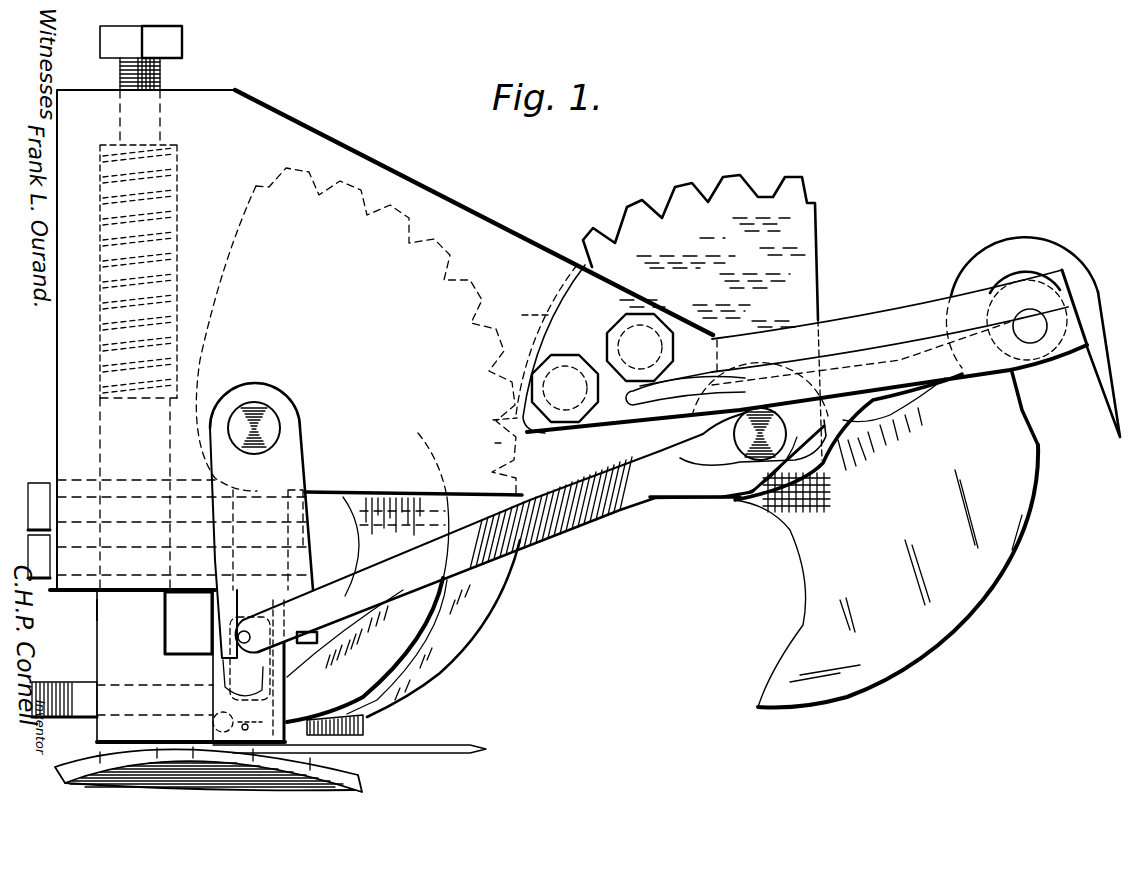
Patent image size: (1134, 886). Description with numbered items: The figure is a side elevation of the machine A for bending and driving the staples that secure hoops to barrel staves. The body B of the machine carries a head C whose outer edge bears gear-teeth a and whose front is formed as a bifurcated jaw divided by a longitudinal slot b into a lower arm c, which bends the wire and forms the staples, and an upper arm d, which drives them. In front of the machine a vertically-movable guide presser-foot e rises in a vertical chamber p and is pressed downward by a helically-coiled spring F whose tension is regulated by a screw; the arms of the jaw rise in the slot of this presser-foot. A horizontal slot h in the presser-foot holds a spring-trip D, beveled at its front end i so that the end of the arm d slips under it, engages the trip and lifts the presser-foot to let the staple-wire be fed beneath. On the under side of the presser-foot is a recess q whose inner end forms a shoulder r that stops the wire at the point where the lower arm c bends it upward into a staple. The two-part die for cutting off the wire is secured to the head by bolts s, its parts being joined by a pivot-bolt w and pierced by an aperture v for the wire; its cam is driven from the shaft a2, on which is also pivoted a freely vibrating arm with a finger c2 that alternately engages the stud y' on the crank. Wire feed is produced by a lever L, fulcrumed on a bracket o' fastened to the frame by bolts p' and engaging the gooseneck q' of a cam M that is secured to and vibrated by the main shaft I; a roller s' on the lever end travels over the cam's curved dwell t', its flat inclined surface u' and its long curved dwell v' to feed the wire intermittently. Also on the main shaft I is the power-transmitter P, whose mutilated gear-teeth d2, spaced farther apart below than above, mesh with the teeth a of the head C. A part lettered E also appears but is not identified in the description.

The staple bending and driving machine A is at (474, 212).
The body B is at (180, 340).
The head C is at (386, 332).
The helically-coiled spring F is at (100, 246).
The vertical chamber p is at (99, 460).
The gear-teeth a is at (162, 73).
The shaft a2 is at (268, 422).
The bolts s is at (39, 530).
The stud y' is at (522, 514).
The guide presser-foot e is at (100, 608).
The horizontal slot h is at (107, 683).
The spring-trip D is at (172, 667).
The beveled front end i is at (238, 671).
The aperture v is at (240, 721).
The recess q is at (209, 769).
The base plate E is at (470, 742).
The finger c2 is at (288, 633).
The upper arm d is at (345, 636).
The longitudinal slot b is at (443, 607).
The lower arm c is at (473, 633).
The lever L is at (532, 508).
The gear-teeth d2 is at (704, 184).
The power-transmitter P is at (702, 317).
The bolts p' is at (602, 368).
The bracket o' is at (863, 328).
The gooseneck q' is at (1022, 291).
The roller s' is at (1050, 320).
The shoulder r is at (1040, 331).
The curved surface or dwell t' is at (1066, 364).
The inclined surface u' is at (1037, 408).
The cam M is at (886, 541).
The long curved surface or dwell v' is at (1012, 552).
The main shaft I is at (747, 440).
The pivot-bolt w is at (797, 437).